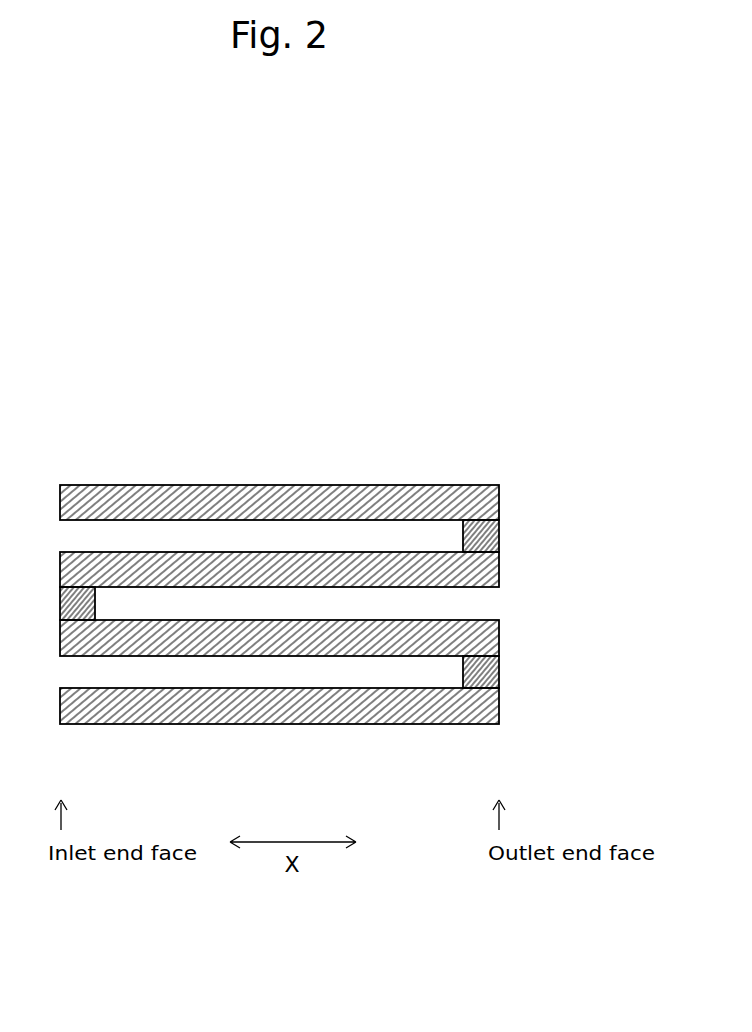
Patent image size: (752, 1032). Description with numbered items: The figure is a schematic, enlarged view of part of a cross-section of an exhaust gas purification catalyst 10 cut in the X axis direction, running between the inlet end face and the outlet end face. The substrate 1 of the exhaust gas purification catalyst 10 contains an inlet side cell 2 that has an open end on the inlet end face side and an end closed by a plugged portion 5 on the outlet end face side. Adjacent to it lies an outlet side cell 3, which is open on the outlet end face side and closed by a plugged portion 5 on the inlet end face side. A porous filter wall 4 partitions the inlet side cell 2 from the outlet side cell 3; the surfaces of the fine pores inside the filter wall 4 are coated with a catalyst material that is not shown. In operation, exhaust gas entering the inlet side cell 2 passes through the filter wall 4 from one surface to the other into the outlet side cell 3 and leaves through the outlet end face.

The exhaust gas purification catalyst 10 is at (511, 340).
The substrate 1 is at (452, 478).
The inlet side cell 2 is at (280, 535).
The outlet side cell 3 is at (355, 612).
The filter wall 4 is at (155, 560).
The plugged portion 5 is at (499, 535).